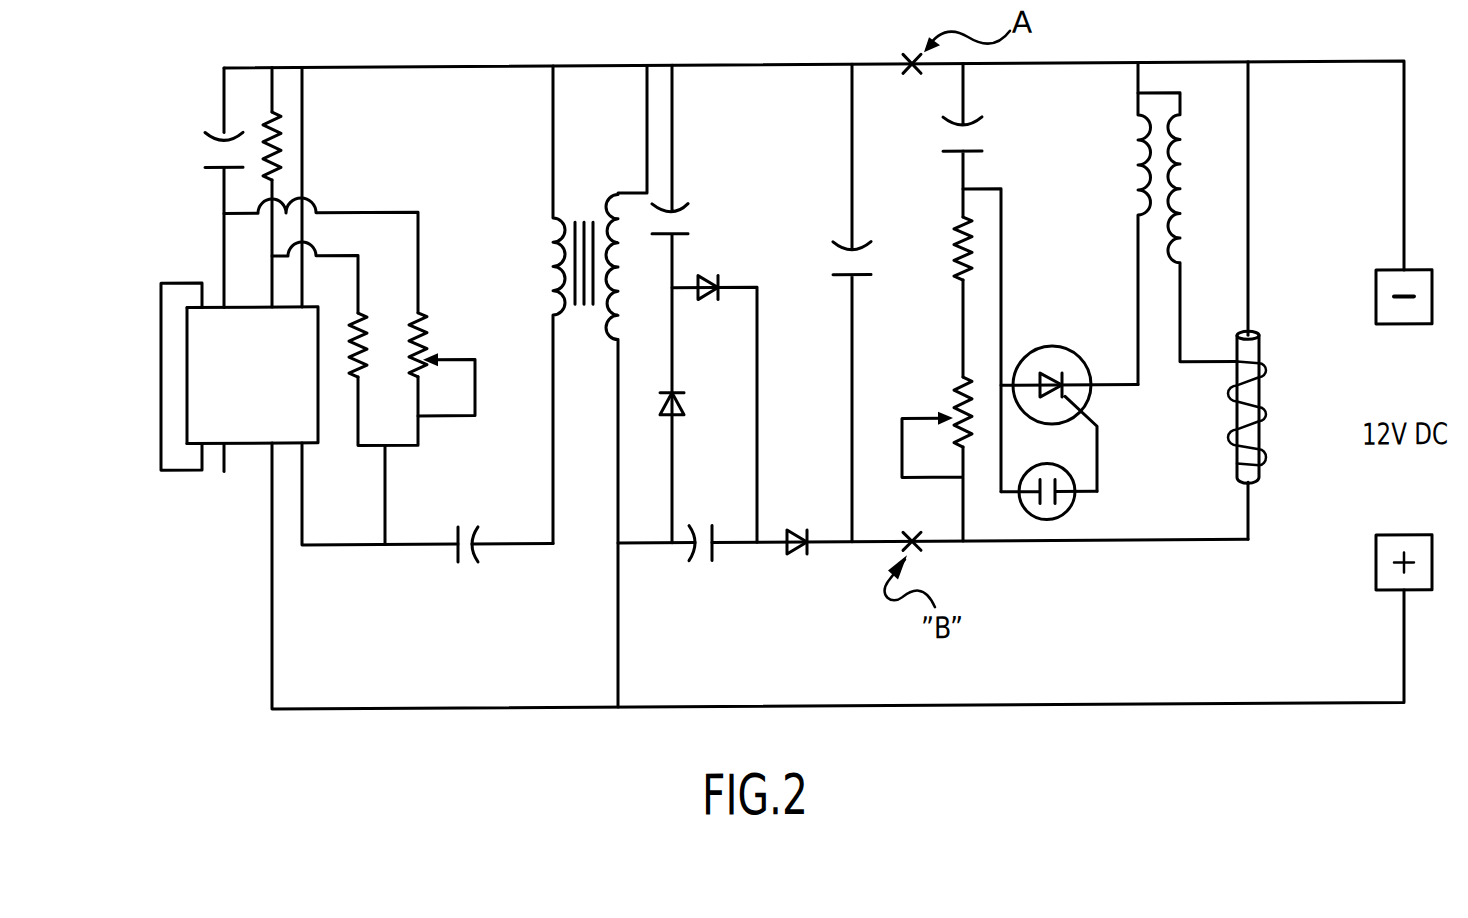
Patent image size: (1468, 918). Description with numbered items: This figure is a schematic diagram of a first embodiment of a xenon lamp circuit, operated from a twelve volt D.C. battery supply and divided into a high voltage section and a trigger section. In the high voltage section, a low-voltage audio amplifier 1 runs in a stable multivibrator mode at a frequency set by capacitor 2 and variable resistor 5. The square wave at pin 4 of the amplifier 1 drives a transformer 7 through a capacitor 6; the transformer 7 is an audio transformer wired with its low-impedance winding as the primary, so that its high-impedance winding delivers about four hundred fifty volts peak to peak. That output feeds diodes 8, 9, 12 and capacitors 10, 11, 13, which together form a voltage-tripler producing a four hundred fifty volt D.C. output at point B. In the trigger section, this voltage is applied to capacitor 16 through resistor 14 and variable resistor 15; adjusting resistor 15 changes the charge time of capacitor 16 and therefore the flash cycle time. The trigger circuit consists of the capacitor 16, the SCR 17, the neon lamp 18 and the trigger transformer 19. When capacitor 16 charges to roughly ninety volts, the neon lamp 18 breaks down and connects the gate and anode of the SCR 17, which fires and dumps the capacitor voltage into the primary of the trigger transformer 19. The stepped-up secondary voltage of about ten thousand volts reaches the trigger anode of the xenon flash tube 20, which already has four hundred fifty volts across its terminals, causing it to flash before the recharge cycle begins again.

The low-voltage audio amplifier 1 is at (232, 390).
The capacitor 2 is at (214, 153).
The pin 4 is at (231, 376).
The variable resistor 5 is at (442, 364).
The capacitor 6 is at (467, 571).
The transformer 7 is at (600, 386).
The diode 8 is at (684, 405).
The diode 9 is at (714, 391).
The capacitor 10 is at (690, 304).
The capacitor 11 is at (703, 565).
The diode 12 is at (797, 517).
The capacitor 13 is at (864, 303).
The resistor 14 is at (942, 289).
The variable resistor 15 is at (937, 452).
The capacitor 16 is at (988, 140).
The SCR 17 is at (1050, 340).
The neon lamp 18 is at (1065, 500).
The trigger transformer 19 is at (1187, 223).
The xenon flash tube 20 is at (1274, 300).